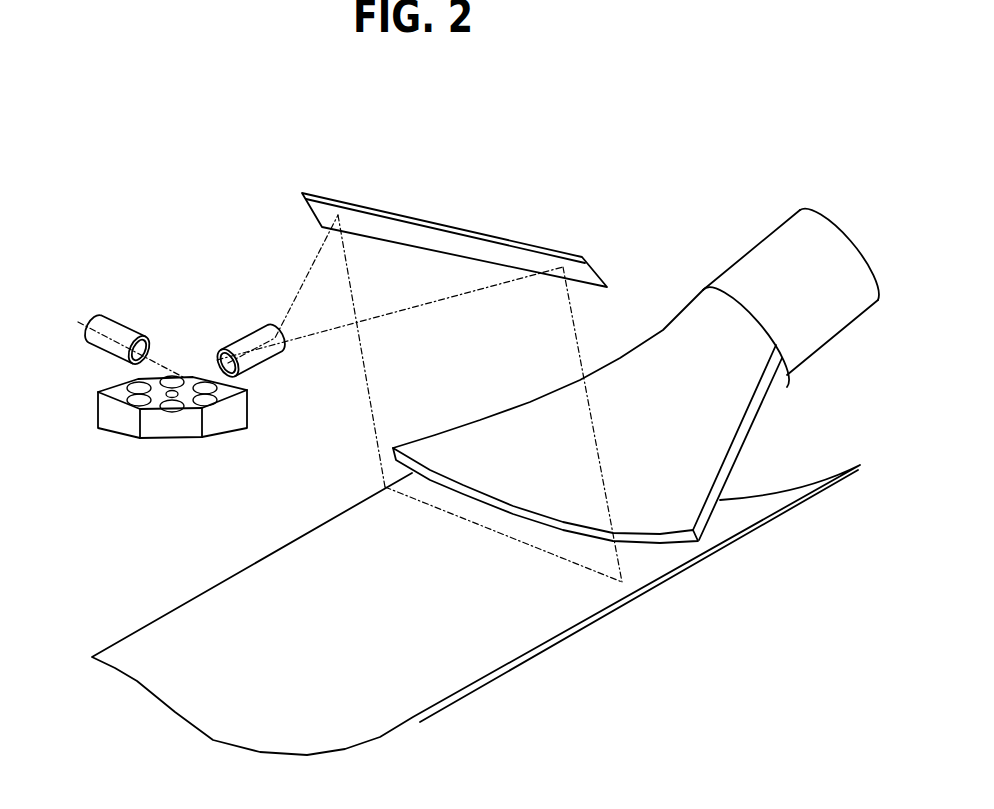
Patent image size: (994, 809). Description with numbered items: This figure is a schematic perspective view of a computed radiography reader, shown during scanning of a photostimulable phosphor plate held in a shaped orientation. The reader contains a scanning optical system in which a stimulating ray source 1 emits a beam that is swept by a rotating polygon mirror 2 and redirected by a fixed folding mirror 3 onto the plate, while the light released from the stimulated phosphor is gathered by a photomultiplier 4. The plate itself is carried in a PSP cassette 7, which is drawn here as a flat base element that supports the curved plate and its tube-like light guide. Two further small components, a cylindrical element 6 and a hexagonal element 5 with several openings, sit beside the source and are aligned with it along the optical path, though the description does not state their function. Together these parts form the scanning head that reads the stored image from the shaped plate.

The stimulating ray source 1 is at (797, 300).
The rotating polygon mirror 2 is at (718, 360).
The fixed folding mirror 3 is at (508, 252).
The photomultiplier 4 is at (253, 333).
The filter wheel 5 is at (180, 410).
The light source 6 is at (118, 322).
The PSP cassette 7 is at (493, 583).